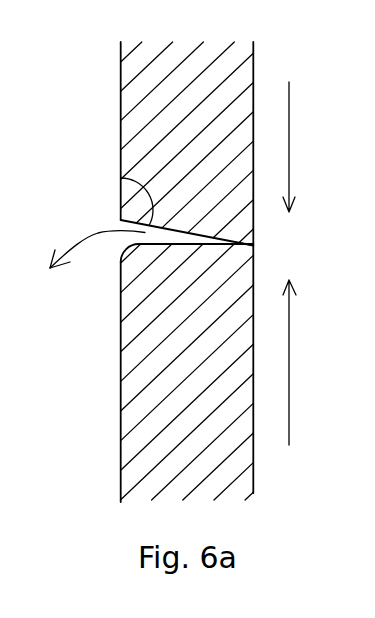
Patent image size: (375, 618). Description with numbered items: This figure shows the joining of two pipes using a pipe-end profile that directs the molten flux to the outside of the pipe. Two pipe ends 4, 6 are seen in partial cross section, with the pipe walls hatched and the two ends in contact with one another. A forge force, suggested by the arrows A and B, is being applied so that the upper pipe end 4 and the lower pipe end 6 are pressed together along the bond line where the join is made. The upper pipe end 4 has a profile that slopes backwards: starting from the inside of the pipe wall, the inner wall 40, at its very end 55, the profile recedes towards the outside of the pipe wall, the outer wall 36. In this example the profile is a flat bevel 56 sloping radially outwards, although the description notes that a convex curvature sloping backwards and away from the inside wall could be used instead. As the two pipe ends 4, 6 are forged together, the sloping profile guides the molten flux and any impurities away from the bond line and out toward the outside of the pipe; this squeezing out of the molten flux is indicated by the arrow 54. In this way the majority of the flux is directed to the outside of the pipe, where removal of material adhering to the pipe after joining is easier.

The pipe end 4 is at (121, 126).
The pipe end 6 is at (121, 378).
The outer wall 36 is at (121, 68).
The inner wall 40 is at (253, 53).
The arrow 54 is at (93, 233).
The very end 55 is at (253, 244).
The flat bevel 56 is at (121, 178).
The arrow A is at (300, 147).
The arrow B is at (299, 362).